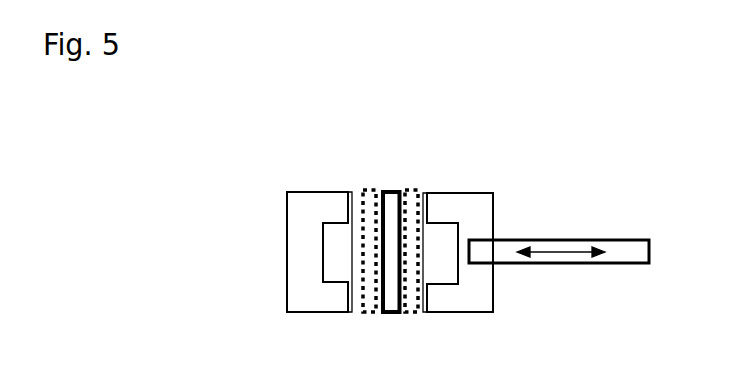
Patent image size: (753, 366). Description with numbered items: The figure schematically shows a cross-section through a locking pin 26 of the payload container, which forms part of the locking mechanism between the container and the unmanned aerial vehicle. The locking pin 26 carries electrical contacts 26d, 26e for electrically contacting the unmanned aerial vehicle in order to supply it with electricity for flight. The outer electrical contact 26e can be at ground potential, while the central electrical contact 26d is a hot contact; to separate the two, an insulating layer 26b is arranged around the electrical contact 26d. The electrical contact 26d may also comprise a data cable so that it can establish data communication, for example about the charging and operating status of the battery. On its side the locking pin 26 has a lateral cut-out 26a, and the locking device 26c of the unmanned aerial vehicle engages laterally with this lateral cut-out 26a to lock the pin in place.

The locking pin 26 is at (458, 203).
The electrical contact 26e is at (460, 252).
The insulating layer 26b is at (371, 220).
The electrical contact 26d is at (392, 195).
The locking device 26c is at (558, 240).
The lateral cut-out 26a is at (457, 266).